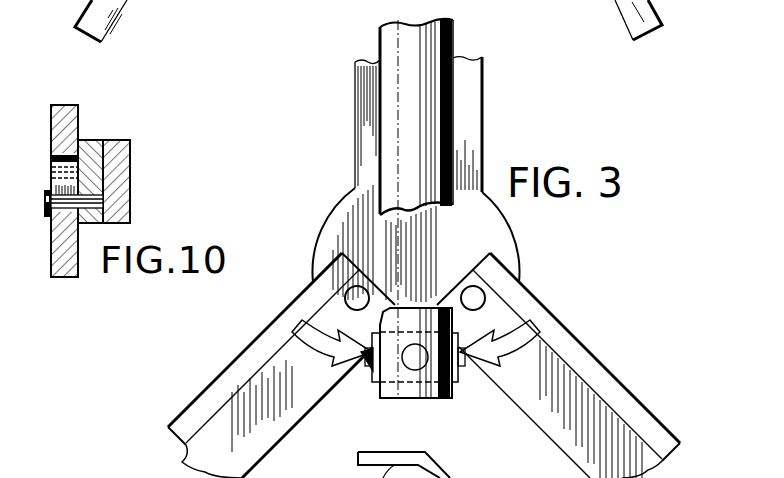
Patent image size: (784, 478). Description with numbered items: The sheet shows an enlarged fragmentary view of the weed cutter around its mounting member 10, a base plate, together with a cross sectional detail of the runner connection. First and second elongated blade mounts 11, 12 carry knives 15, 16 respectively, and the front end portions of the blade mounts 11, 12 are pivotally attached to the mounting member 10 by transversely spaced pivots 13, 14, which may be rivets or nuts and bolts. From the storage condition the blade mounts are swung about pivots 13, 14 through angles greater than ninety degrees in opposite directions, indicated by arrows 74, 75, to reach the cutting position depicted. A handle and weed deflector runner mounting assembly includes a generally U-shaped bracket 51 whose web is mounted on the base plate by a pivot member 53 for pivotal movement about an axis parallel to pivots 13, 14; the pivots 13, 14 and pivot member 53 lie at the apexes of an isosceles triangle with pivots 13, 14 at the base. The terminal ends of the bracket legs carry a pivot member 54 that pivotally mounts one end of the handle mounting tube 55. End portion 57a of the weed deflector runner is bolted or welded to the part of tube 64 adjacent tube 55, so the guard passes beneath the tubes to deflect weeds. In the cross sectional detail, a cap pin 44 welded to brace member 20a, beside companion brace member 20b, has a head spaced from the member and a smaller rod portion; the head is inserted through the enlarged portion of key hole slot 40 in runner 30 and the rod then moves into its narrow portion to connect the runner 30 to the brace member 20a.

In FIG. 3, the mounting member 10 is at (338, 222).
In FIG. 3, the first elongated blade mount 11 is at (210, 437).
In FIG. 3, the second elongated blade mount 12 is at (620, 437).
In FIG. 3, the pivot 13 is at (352, 290).
In FIG. 3, the pivot 14 is at (481, 290).
In FIG. 3, the knife 15 is at (280, 328).
In FIG. 3, the knife 16 is at (580, 352).
In FIG. 3, the generally U-shaped bracket 51 is at (458, 380).
In FIG. 3, the pivot member 53 is at (413, 370).
In FIG. 3, the pivot member 54 is at (360, 367).
In FIG. 3, the handle mounting tube 55 is at (423, 388).
In FIG. 3, the end portion of weed deflector runner 57a is at (470, 80).
In FIG. 3, the tube 64 is at (392, 50).
In FIG. 3, the arrow 74 is at (317, 347).
In FIG. 3, the arrow 75 is at (520, 342).
In FIG. 10, the brace member 20a is at (90, 145).
In FIG. 10, the brace member 20b is at (125, 185).
In FIG. 10, the runner 30 is at (63, 277).
In FIG. 10, the key hole slot 40 is at (52, 160).
In FIG. 10, the cap pin 44 is at (50, 207).